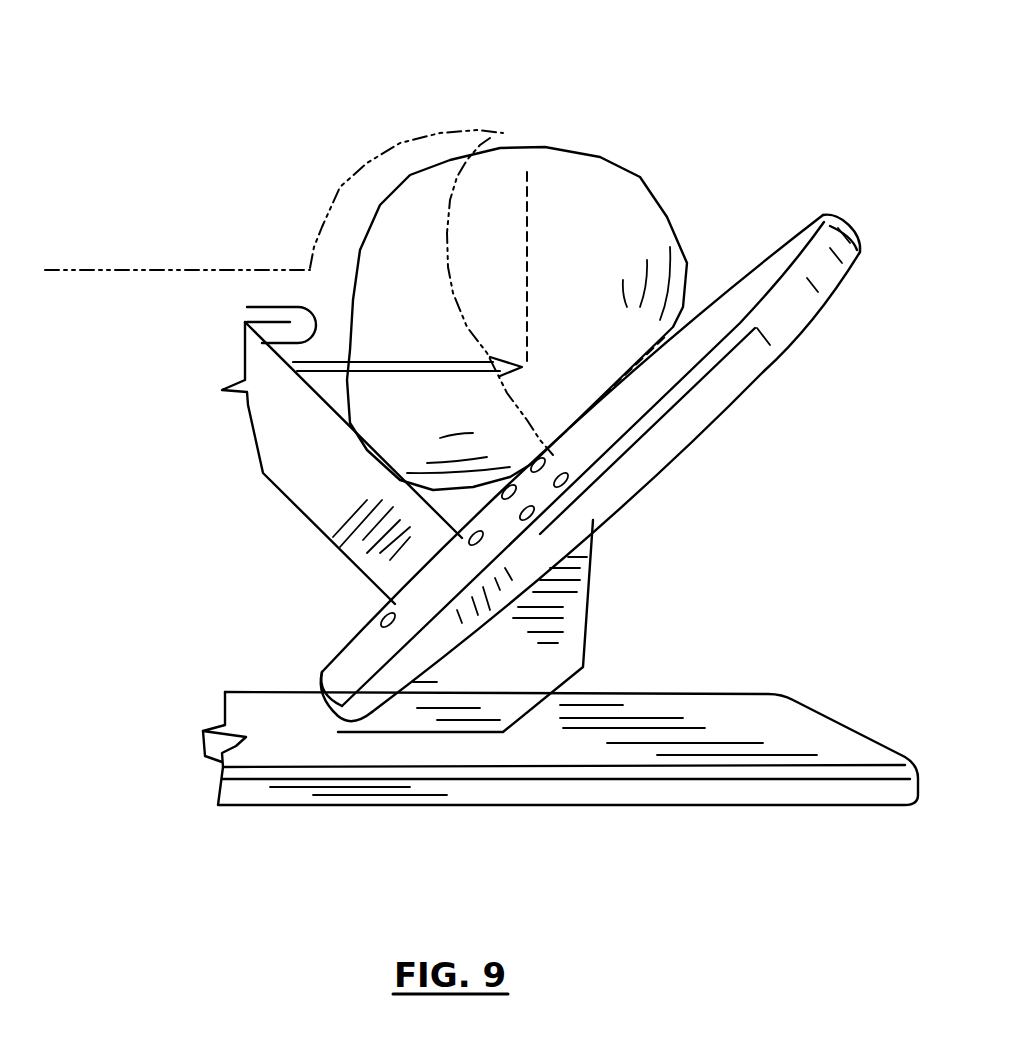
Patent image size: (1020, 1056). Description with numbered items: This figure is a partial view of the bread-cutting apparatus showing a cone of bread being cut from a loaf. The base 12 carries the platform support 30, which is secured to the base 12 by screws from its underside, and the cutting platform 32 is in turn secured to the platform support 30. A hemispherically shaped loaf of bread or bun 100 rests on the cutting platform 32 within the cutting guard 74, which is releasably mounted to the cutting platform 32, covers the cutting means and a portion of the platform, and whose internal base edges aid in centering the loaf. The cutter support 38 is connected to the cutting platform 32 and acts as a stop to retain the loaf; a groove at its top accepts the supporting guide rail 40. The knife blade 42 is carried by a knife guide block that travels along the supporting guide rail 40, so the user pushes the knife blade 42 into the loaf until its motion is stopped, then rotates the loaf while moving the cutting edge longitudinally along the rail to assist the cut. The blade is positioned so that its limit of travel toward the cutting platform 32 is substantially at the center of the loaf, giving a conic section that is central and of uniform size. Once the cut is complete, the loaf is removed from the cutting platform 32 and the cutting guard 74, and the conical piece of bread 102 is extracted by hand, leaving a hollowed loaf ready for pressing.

The base 12 is at (793, 723).
The platform support 30 is at (490, 708).
The cutting platform 32 is at (770, 268).
The cutter support 38 is at (307, 483).
The supporting guide rail 40 is at (247, 320).
The knife blade 42 is at (300, 372).
The cutting guard 74 is at (325, 200).
The loaf of bread or bun 100 is at (622, 213).
The conical piece of bread 102 is at (500, 227).